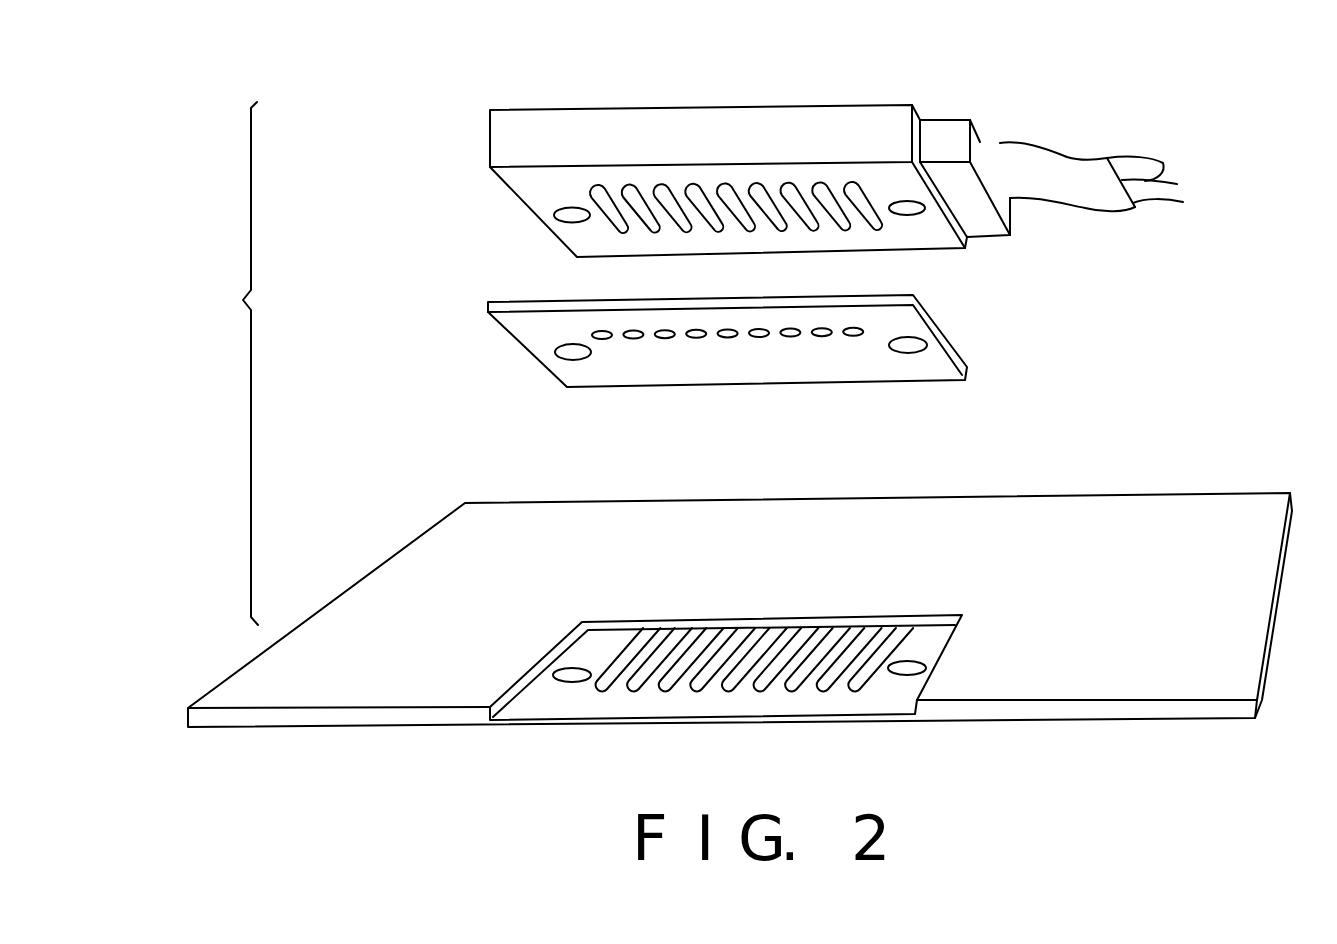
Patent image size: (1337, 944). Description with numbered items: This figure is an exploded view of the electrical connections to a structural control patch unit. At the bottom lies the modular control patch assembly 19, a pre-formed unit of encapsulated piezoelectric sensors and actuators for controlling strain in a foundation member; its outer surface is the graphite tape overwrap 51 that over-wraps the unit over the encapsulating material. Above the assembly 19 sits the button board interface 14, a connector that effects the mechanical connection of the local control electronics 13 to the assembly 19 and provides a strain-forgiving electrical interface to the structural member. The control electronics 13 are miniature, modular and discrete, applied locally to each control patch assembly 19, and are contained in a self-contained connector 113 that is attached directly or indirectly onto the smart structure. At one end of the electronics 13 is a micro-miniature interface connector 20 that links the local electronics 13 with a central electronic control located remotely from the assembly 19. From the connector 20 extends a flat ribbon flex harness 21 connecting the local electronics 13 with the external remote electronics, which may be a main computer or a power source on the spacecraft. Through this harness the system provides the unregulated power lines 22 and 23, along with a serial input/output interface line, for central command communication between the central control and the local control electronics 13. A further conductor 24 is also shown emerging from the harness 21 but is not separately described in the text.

The self-contained connector 113 is at (856, 150).
The control electronics 13 is at (777, 130).
The button board interface 14 is at (520, 347).
The modular control patch assembly 19 is at (740, 595).
The micro-miniature interface connector 20 is at (942, 118).
The flat ribbon flex harness 21 is at (1111, 168).
The unregulated power line 22 is at (1113, 160).
The unregulated power line 23 is at (1163, 160).
The second conductor 24 is at (1188, 214).
The graphite tape overwrap 51 is at (1107, 608).